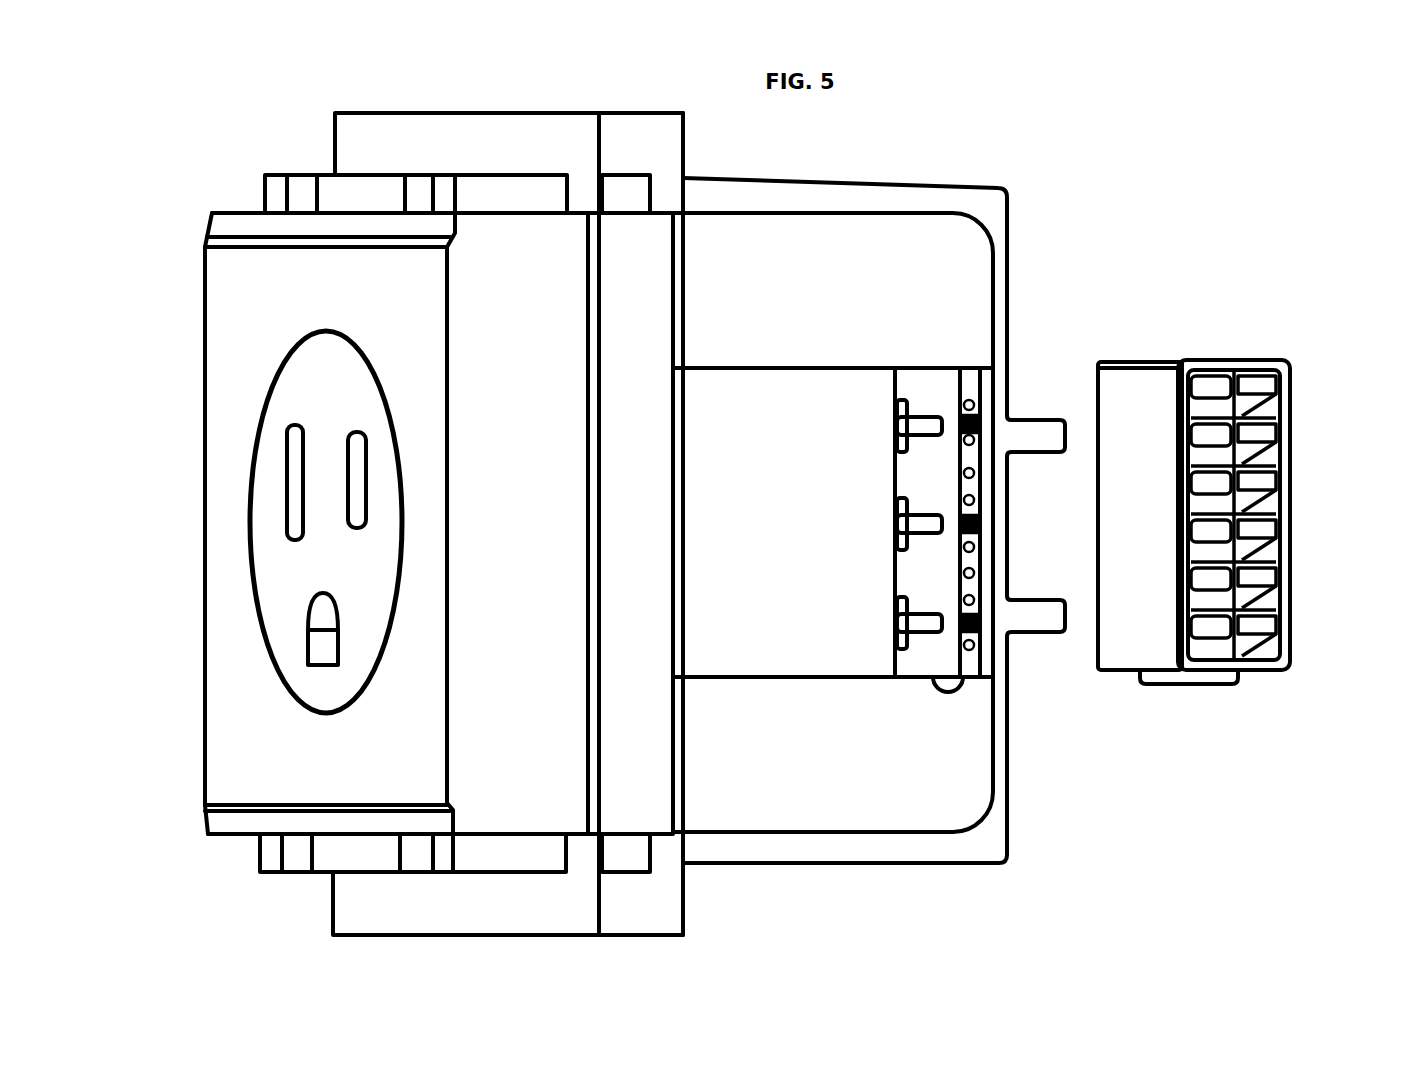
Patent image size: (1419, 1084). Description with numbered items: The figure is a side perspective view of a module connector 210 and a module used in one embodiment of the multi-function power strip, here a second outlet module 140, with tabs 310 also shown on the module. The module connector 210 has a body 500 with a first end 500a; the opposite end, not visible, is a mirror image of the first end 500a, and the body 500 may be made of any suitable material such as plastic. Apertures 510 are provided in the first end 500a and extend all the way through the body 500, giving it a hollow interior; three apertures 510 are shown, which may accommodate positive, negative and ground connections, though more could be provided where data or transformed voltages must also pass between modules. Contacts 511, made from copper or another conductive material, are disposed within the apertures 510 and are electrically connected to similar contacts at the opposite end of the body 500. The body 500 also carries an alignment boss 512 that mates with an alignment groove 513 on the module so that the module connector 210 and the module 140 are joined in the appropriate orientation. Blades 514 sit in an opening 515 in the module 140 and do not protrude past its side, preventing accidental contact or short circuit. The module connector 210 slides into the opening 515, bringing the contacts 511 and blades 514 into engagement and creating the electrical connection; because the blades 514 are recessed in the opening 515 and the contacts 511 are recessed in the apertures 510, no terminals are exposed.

The second outlet module 140 is at (262, 305).
The tabs 310 is at (532, 140).
The module connector 210 is at (1181, 360).
The body 500 is at (1137, 428).
The first end 500a is at (1275, 668).
The apertures 510 is at (1175, 465).
The contacts 511 is at (1270, 433).
The alignment boss 512 is at (1202, 674).
The alignment groove 513 is at (953, 693).
The blades 514 is at (894, 590).
The opening 515 is at (933, 388).